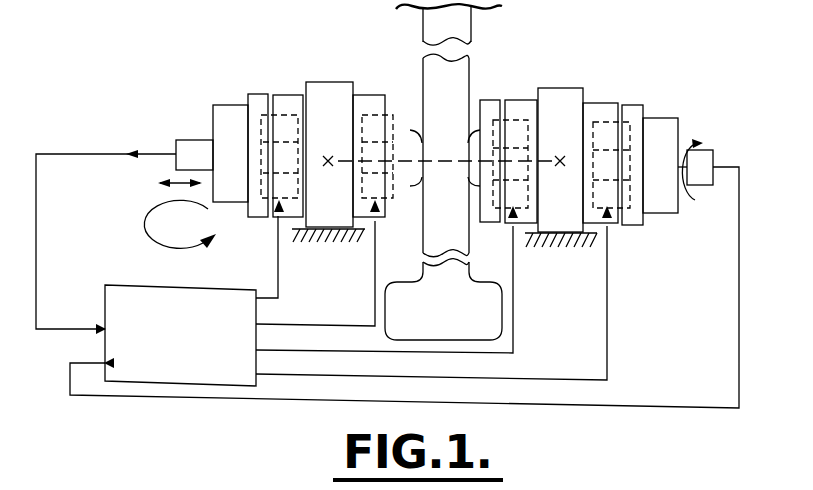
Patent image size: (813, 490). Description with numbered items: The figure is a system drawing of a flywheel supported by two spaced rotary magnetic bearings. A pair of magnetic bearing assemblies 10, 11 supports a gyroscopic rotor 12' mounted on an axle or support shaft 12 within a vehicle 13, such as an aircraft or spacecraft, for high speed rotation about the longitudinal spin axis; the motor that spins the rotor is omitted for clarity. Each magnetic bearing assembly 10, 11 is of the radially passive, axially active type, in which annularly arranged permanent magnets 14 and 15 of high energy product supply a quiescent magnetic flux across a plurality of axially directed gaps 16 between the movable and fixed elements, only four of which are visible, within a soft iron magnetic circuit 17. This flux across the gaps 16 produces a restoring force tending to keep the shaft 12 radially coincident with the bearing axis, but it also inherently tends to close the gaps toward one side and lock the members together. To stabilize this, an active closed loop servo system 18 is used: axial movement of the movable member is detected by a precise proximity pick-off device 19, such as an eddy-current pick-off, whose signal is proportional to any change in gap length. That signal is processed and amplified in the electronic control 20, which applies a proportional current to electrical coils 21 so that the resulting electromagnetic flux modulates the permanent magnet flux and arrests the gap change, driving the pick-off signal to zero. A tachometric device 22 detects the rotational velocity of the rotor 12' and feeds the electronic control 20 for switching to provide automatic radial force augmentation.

The magnetic bearing assembly 10 is at (256, 50).
The magnetic bearing assembly 11 is at (607, 43).
The support shaft 12 is at (447, 197).
The gyroscopic rotor 12' is at (464, 24).
The vehicle 13 is at (546, 248).
The permanent magnet 14 is at (330, 82).
The permanent magnet 15 is at (566, 88).
The axially directed gap 16 is at (628, 110).
The soft iron magnetic circuit 17 is at (598, 230).
The active closed loop servo system 18 is at (194, 235).
The proximity pick-off device 19 is at (193, 140).
The electronic control 20 is at (105, 300).
The electrical coil 21 is at (292, 114).
The tachometric device 22 is at (713, 150).